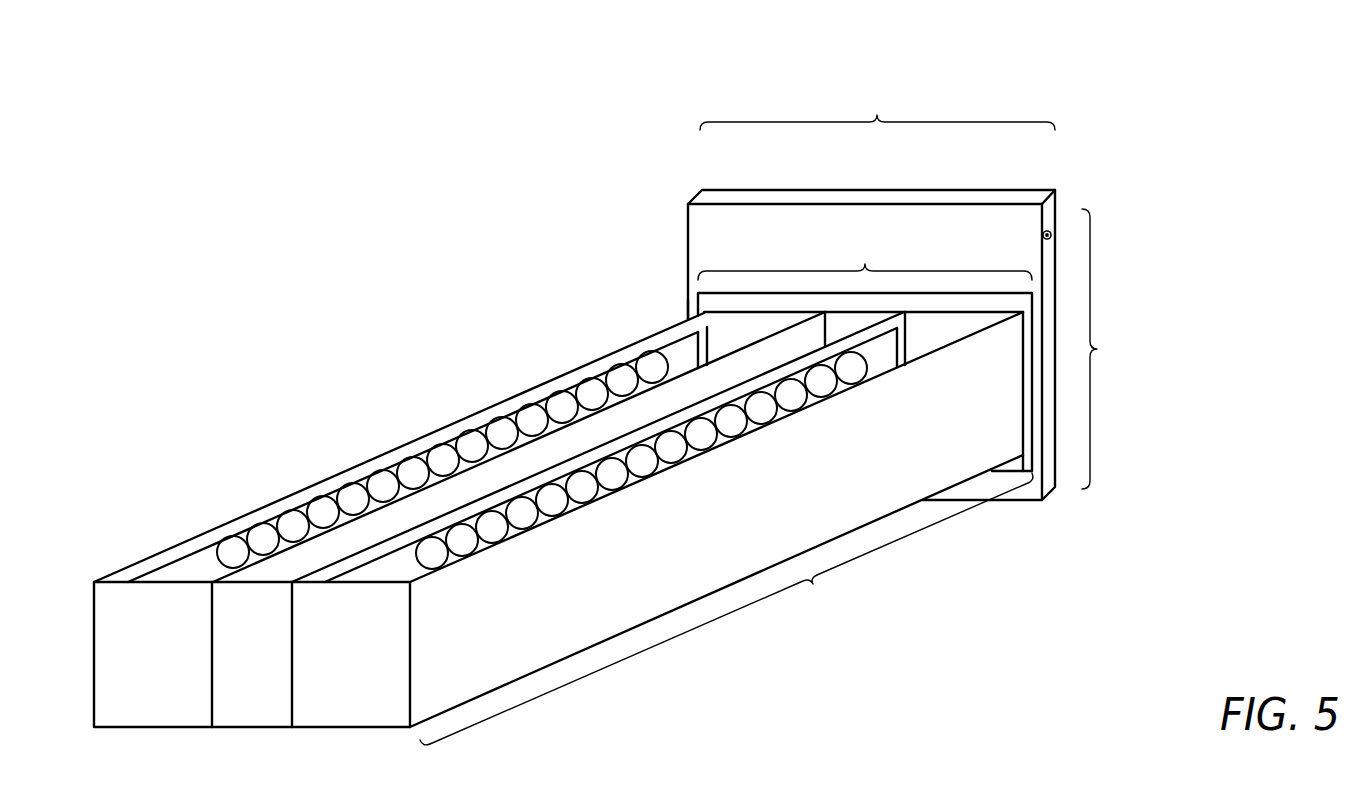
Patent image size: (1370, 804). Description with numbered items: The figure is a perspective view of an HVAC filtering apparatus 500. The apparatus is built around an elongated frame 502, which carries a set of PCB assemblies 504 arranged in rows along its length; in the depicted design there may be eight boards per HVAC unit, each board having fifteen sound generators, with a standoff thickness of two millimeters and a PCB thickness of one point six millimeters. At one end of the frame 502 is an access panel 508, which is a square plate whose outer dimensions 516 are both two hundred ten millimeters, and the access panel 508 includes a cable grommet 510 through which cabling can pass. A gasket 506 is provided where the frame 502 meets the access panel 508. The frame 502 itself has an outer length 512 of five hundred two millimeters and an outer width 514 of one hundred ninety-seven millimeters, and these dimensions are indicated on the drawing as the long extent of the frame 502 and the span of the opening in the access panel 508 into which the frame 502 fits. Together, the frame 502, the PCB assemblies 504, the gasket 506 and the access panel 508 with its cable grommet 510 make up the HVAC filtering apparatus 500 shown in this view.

The HVAC filtering apparatus 500 is at (1246, 142).
The frame 502 is at (755, 534).
The PCB assemblies 504 is at (731, 421).
The gasket 506 is at (688, 308).
The access panel 508 is at (758, 242).
The cable grommet 510 is at (1049, 231).
The outer length 512 is at (726, 609).
The outer width 514 is at (865, 253).
The outer dimensions 516 is at (924, 287).